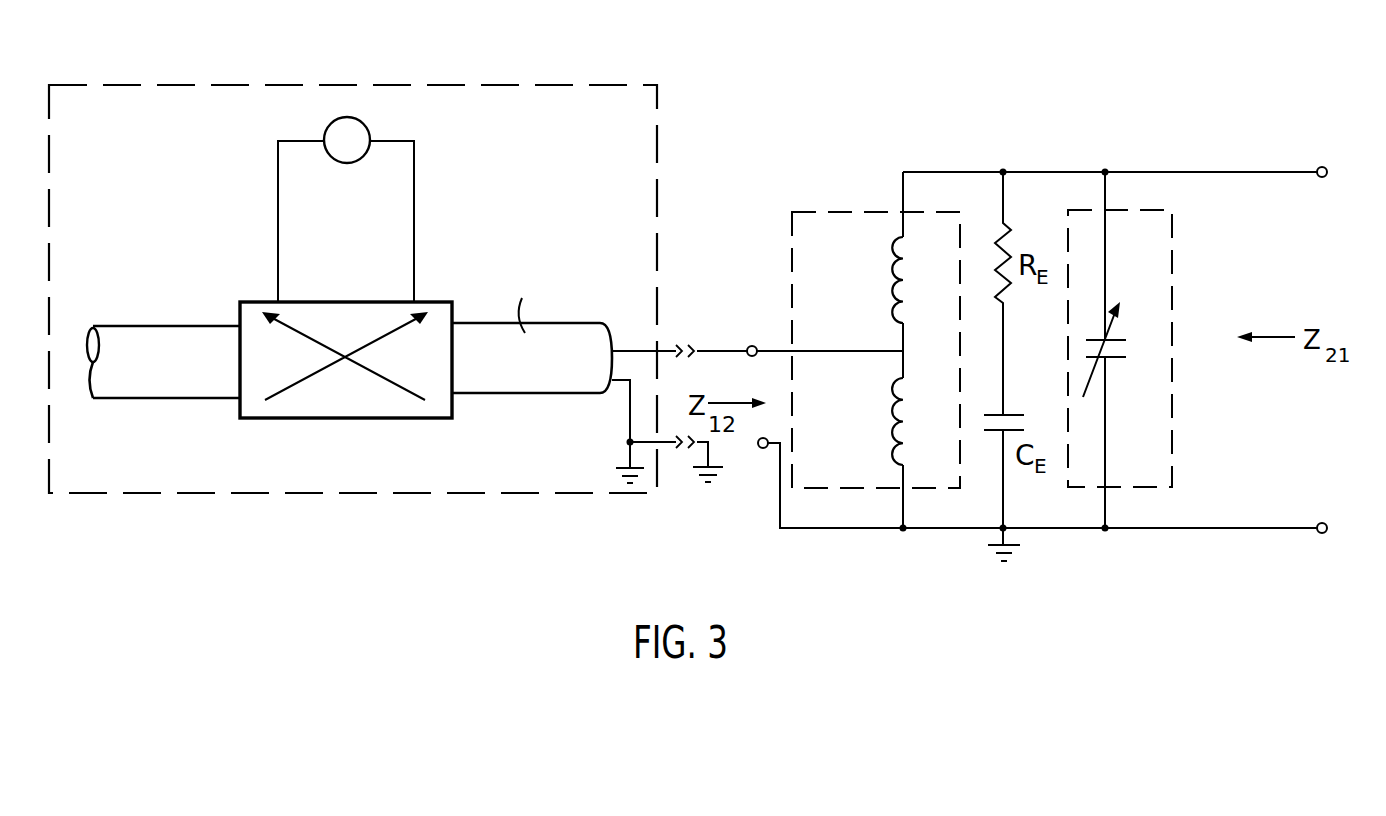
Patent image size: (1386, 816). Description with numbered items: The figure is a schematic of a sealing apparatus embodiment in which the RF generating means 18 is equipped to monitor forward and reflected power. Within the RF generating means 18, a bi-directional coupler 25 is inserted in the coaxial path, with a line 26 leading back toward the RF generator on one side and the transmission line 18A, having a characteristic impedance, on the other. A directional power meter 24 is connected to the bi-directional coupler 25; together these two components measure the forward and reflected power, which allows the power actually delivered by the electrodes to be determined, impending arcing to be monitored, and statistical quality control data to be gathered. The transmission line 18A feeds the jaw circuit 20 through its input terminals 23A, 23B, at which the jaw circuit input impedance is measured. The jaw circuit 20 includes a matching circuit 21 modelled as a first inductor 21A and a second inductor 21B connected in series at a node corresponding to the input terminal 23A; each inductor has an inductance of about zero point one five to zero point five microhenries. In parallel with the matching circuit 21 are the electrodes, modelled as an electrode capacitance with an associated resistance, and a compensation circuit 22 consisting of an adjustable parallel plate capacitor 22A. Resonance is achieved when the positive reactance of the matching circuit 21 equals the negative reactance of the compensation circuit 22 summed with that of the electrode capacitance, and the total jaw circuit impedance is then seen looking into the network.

The RF generating means 18 is at (597, 85).
The transmission line 18A is at (487, 323).
The jaw circuit 20 is at (1033, 148).
The matching circuit 21 is at (873, 337).
The first inductor L1 21A is at (887, 437).
The second inductor L2 21B is at (887, 277).
The compensation circuit 22 is at (1153, 350).
The adjustable parallel plate capacitor 22A is at (1125, 350).
The input terminal 23A is at (752, 345).
The input terminal 23B is at (761, 449).
The directional power meter 24 is at (352, 163).
The bi-directional coupler 25 is at (360, 418).
The coaxial line to RF generator 26 is at (153, 325).